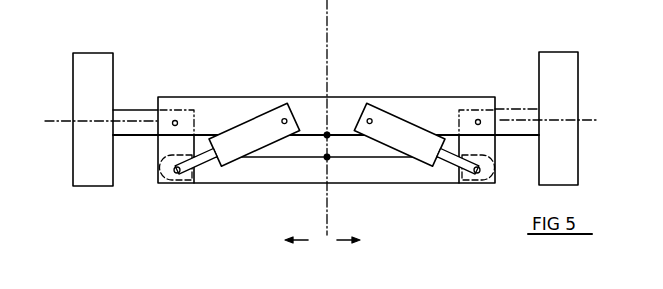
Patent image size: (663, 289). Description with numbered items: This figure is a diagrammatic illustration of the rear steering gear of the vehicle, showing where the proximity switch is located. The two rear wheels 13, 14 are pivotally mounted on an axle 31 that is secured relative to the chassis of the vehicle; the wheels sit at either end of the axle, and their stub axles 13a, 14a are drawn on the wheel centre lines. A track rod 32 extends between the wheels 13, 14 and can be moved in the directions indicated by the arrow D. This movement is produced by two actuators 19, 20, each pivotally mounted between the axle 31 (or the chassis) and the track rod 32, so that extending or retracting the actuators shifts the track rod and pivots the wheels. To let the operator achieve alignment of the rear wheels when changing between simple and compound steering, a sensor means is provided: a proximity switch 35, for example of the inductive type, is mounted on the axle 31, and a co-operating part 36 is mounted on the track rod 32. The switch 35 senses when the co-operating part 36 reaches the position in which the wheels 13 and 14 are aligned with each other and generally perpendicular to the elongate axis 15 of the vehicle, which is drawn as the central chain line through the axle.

The rear wheel 13 is at (88, 59).
The left wheel axle 13a is at (148, 121).
The rear wheel 14 is at (567, 58).
The right wheel axle 14a is at (511, 118).
The elongate axis 15 is at (327, 7).
The actuator 19 is at (265, 123).
The actuator 20 is at (402, 130).
The axle 31 is at (338, 112).
The track rod 32 is at (371, 170).
The proximity switch 35 is at (323, 132).
The co-operating part 36 is at (326, 158).
The arrow D is at (322, 247).